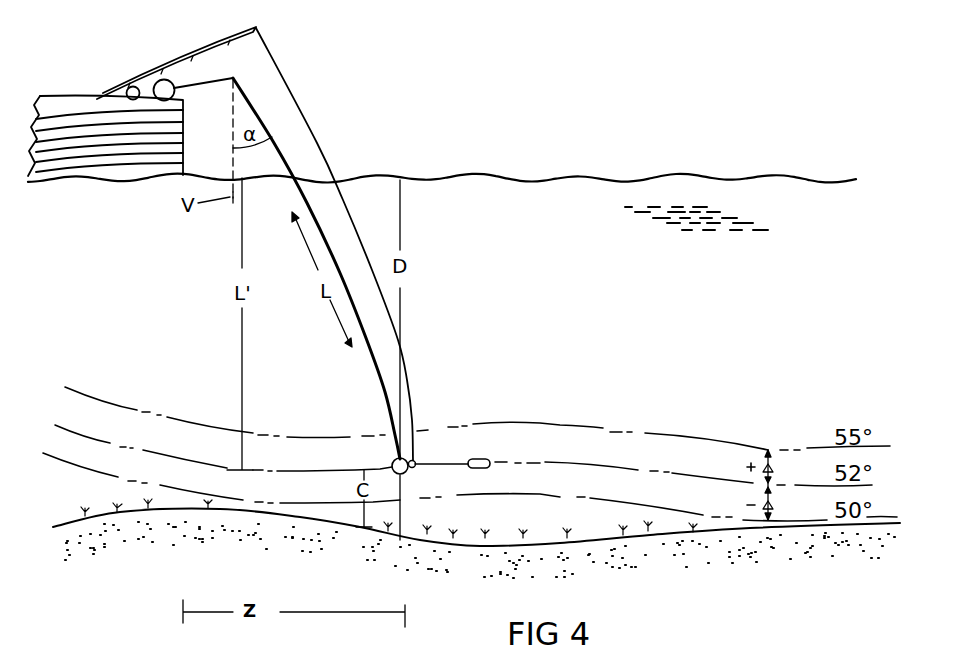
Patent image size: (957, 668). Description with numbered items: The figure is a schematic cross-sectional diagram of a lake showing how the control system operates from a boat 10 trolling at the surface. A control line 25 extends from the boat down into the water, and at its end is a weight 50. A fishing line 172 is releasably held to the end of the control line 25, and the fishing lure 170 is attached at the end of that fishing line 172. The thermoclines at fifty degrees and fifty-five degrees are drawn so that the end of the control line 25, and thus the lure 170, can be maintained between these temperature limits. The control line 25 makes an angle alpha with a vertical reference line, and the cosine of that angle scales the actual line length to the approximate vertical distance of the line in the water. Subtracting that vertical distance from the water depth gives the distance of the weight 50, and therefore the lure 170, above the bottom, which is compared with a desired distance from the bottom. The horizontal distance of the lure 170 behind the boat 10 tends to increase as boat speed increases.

The vessel 10 is at (182, 77).
The fishing lure 170 is at (293, 98).
The control line 25 is at (383, 382).
The fishing line 172 is at (478, 458).
The weight 50 is at (406, 470).